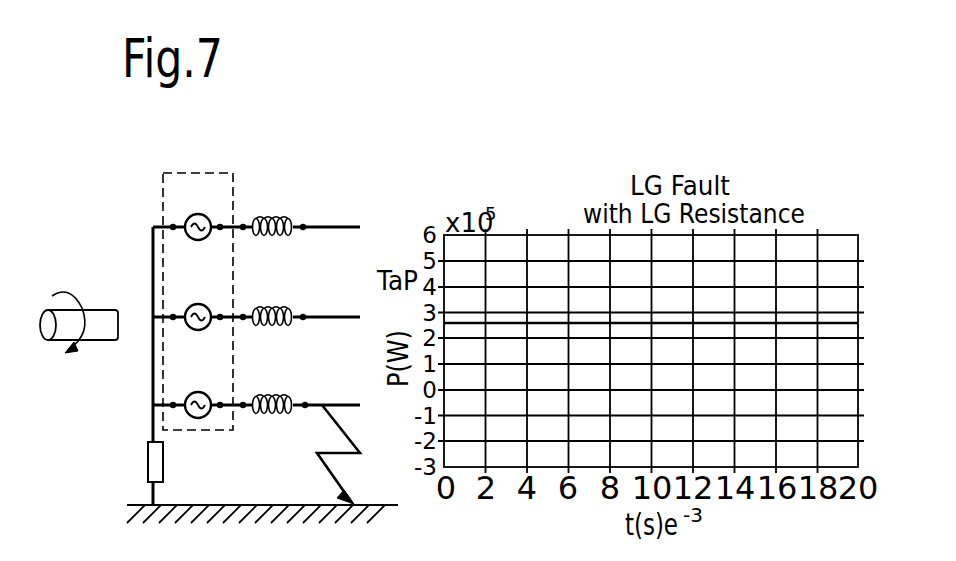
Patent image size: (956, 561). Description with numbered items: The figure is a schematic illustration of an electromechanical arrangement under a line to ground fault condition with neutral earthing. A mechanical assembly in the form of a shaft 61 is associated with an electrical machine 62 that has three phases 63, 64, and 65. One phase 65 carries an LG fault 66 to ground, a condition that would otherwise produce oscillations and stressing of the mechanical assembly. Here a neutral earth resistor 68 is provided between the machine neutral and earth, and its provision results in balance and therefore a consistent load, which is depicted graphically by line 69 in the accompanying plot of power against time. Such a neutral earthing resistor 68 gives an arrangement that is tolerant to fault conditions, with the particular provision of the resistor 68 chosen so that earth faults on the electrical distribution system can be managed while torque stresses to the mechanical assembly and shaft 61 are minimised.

The shaft 61 is at (102, 328).
The electrical machine 62 is at (222, 181).
The phase 63 is at (196, 214).
The phase 64 is at (203, 304).
The phase 65 is at (203, 392).
The LG fault 66 is at (328, 475).
The neutral earth resistor 68 is at (153, 467).
The line 69 is at (748, 320).